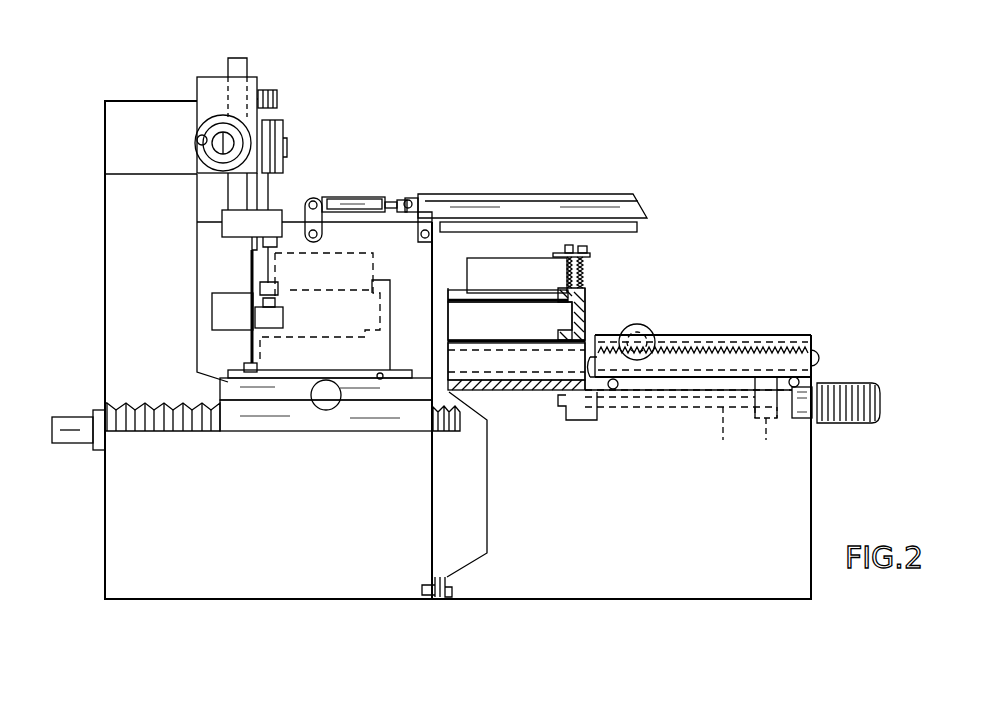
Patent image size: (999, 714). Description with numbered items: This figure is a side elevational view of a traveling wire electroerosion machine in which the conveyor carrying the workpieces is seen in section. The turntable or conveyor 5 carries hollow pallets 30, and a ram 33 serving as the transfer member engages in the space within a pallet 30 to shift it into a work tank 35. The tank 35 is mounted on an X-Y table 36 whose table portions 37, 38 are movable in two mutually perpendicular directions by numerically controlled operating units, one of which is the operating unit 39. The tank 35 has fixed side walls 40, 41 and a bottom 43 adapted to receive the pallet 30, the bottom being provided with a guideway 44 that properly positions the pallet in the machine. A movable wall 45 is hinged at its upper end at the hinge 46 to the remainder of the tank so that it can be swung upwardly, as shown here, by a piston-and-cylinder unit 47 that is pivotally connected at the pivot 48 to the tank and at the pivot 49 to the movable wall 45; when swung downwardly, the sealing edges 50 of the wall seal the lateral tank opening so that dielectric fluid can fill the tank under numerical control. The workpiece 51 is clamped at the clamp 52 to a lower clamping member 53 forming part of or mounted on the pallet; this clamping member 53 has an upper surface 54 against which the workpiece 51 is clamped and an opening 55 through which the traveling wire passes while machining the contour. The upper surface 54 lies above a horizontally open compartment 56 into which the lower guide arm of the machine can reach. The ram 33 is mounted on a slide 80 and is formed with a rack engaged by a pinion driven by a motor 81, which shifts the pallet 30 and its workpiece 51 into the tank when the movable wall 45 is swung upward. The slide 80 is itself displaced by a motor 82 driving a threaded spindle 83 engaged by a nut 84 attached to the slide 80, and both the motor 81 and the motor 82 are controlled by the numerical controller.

The turntable or conveyor 5 is at (502, 390).
The pallet 30 is at (548, 372).
The ram 33 is at (597, 380).
The work tank 35 is at (258, 262).
The X-Y table 36 is at (356, 440).
The table portion 37 is at (267, 390).
The table portion 38 is at (293, 420).
The numerically controlled operating unit 39 is at (327, 400).
The side wall 40 is at (432, 265).
The side wall 41 is at (250, 297).
The bottom 43 is at (383, 379).
The guideway 44 is at (240, 378).
The movable wall 45 is at (521, 196).
The hinge 46 is at (427, 230).
The piston-and-cylinder unit 47 is at (347, 197).
The pivotal connection 48 is at (306, 218).
The pivotal connection 49 is at (409, 198).
The sealing edges 50 is at (602, 227).
The workpiece 51 is at (500, 270).
The clamp 52 is at (553, 253).
The lower clamping member 53 is at (587, 323).
The upper surface 54 is at (570, 292).
The opening 55 is at (480, 293).
The horizontally open compartment 56 is at (457, 330).
The slide 80 is at (803, 372).
The motor 81 is at (647, 325).
The motor 82 is at (880, 393).
The threaded spindle 83 is at (724, 438).
The nut 84 is at (767, 438).